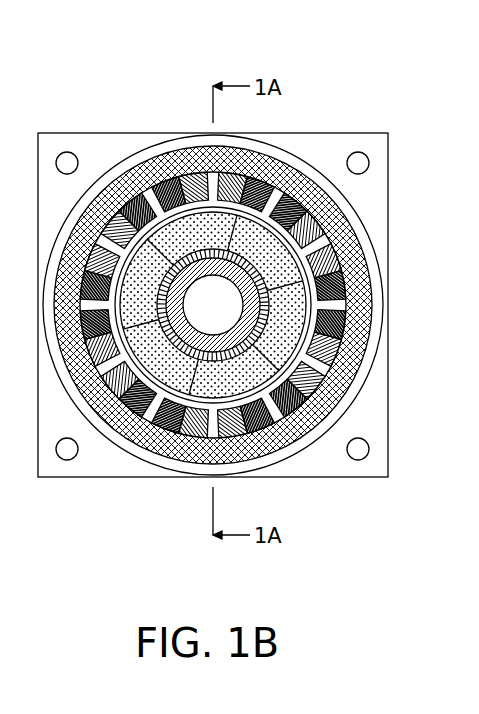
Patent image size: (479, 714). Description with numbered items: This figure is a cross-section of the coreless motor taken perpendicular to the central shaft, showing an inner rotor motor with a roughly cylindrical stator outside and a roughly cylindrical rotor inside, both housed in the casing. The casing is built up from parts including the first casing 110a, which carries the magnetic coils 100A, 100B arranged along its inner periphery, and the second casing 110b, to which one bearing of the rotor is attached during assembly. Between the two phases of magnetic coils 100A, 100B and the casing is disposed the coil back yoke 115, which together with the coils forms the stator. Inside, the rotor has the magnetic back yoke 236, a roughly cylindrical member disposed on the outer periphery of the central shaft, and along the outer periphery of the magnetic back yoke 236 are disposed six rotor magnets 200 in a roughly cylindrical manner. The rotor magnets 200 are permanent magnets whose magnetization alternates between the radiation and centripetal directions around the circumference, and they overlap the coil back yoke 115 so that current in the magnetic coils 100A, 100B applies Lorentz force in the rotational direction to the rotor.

The first casing 110a is at (180, 147).
The second casing 110b is at (123, 147).
The coil back yoke 115 is at (297, 168).
The magnetic coil 100A is at (297, 392).
The magnetic coil 100B is at (200, 424).
The rotor magnet 200 is at (288, 267).
The magnetic back yoke 236 is at (263, 308).